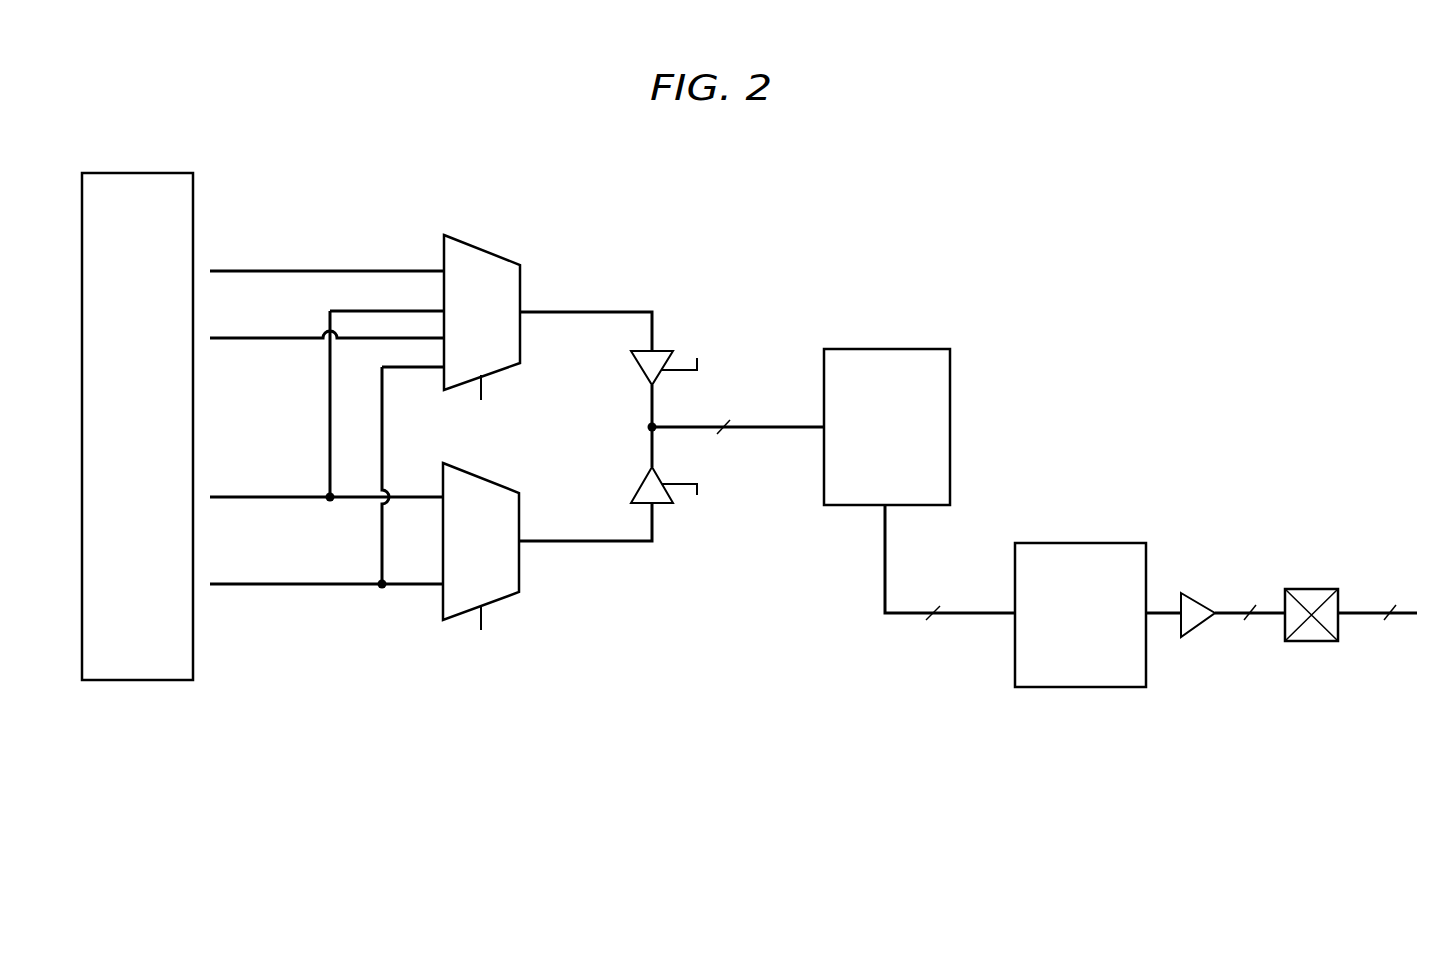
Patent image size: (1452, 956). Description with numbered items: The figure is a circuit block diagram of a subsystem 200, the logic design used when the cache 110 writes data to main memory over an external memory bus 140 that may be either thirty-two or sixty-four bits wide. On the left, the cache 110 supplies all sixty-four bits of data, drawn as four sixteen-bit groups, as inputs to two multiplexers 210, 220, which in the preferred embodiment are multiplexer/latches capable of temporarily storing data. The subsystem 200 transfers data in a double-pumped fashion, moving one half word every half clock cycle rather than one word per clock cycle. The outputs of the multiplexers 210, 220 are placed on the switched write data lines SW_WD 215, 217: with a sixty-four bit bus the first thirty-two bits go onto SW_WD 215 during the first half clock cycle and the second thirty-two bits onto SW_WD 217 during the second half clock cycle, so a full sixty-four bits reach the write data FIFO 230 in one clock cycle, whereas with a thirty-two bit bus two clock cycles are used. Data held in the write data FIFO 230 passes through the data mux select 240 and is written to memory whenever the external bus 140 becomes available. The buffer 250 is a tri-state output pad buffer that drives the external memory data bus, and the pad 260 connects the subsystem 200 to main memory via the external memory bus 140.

The cache 110 is at (118, 173).
The external memory bus 140 is at (1368, 510).
The subsystem 200 is at (385, 738).
The multiplexer 210 is at (480, 245).
The SW_WD 215 is at (603, 280).
The SW_WD 217 is at (592, 577).
The multiplexer 220 is at (482, 478).
The write data FIFO 230 is at (880, 349).
The data mux select 240 is at (1078, 543).
The buffer 250 is at (1200, 593).
The pad 260 is at (1303, 643).